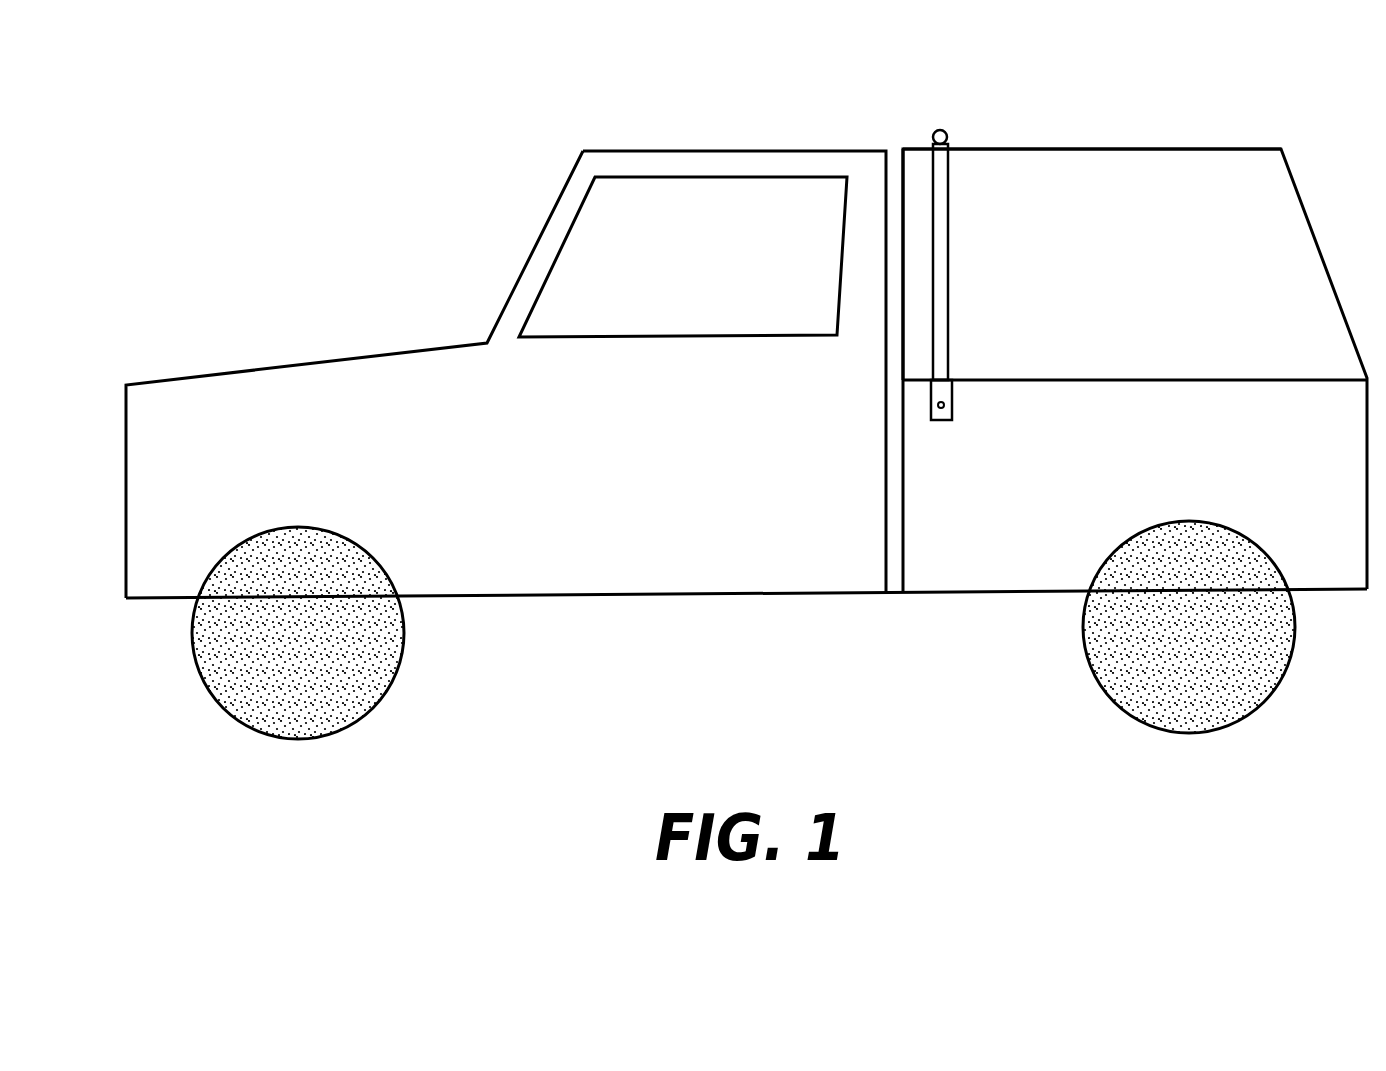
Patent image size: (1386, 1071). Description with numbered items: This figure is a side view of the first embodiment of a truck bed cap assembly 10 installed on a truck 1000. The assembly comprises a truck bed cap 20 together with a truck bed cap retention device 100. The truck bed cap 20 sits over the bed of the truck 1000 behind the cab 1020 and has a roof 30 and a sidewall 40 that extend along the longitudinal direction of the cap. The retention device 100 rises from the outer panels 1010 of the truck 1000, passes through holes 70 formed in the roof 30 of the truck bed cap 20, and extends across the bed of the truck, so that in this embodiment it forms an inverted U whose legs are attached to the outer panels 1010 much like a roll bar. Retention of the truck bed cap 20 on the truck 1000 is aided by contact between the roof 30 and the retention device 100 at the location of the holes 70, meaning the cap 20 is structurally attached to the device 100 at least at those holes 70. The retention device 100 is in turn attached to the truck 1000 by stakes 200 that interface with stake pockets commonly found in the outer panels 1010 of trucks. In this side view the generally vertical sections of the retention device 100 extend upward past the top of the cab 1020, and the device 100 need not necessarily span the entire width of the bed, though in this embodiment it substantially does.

The truck bed cap assembly 10 is at (910, 227).
The truck bed cap 20 is at (1135, 322).
The roof 30 is at (1188, 149).
The sidewall 40 is at (1040, 180).
The holes 70 is at (947, 153).
The truck bed cap retention device 100 is at (933, 134).
The stakes 200 is at (932, 407).
The truck 1000 is at (746, 383).
The outer panels 1010 is at (1093, 380).
The cab 1020 is at (607, 148).